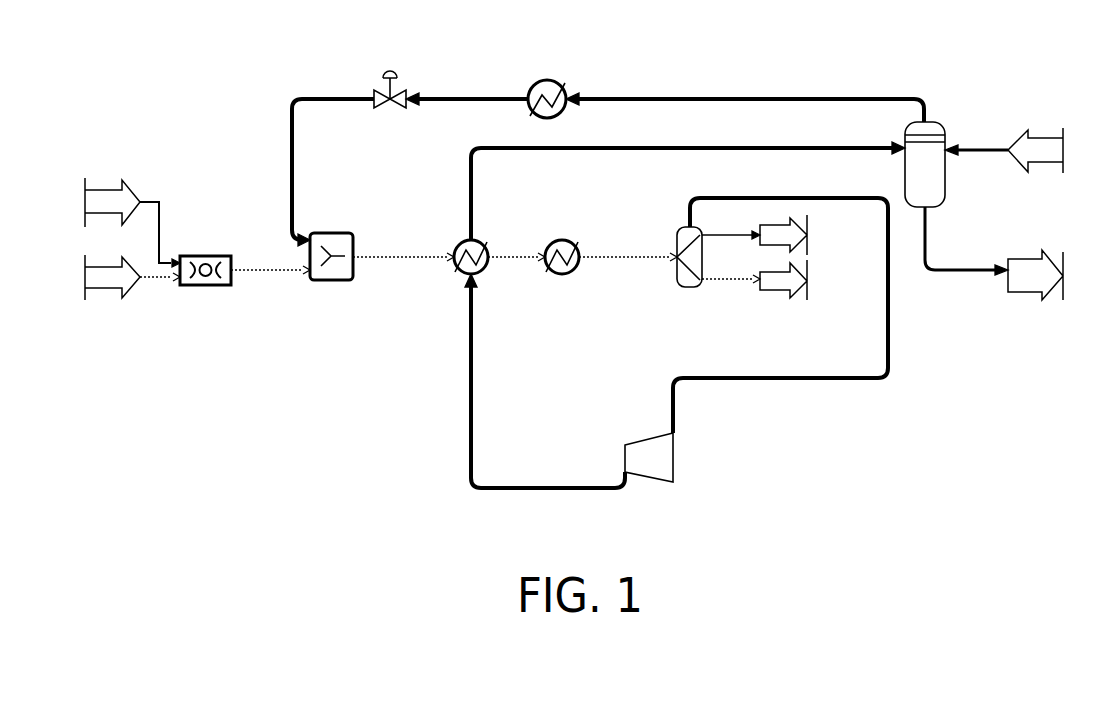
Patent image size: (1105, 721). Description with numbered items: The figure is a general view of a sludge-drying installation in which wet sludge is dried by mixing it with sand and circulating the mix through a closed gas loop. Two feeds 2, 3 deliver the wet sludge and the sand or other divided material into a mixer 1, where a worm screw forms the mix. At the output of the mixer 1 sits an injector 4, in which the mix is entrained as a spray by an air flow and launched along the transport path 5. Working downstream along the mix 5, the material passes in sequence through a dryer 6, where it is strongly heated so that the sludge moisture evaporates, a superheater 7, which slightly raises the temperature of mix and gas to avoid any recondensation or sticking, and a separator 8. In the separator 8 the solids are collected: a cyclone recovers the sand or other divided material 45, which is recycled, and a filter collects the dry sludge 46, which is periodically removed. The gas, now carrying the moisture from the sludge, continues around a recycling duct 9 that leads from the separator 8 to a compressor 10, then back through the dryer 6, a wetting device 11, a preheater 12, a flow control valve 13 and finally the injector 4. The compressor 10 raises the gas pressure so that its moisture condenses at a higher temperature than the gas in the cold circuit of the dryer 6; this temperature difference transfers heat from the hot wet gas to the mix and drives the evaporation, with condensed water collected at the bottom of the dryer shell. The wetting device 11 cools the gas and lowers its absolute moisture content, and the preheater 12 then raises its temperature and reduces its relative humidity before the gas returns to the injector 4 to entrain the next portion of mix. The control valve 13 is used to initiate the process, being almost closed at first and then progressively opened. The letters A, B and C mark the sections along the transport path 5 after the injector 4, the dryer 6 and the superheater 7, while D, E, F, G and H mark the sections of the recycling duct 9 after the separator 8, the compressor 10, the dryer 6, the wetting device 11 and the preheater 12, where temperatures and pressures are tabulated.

The mixer 1 is at (198, 283).
The feed 2 is at (107, 283).
The feed 3 is at (108, 200).
The injector 4 is at (334, 279).
The mix transport path 5 is at (418, 262).
The dryer 6 is at (458, 245).
The superheater 7 is at (560, 272).
The separator 8 is at (683, 288).
The recycling duct 9 is at (890, 328).
The compressor 10 is at (665, 462).
The wetting device 11 is at (928, 130).
The preheater 12 is at (532, 87).
The flow control valve 13 is at (396, 104).
The sand or other divided material 45 is at (731, 233).
The dry sludge 46 is at (731, 278).
The section A is at (390, 255).
The section B is at (520, 255).
The section C is at (628, 255).
The section D is at (785, 380).
The section E is at (469, 403).
The section F is at (787, 147).
The section G is at (705, 97).
The section H is at (340, 97).